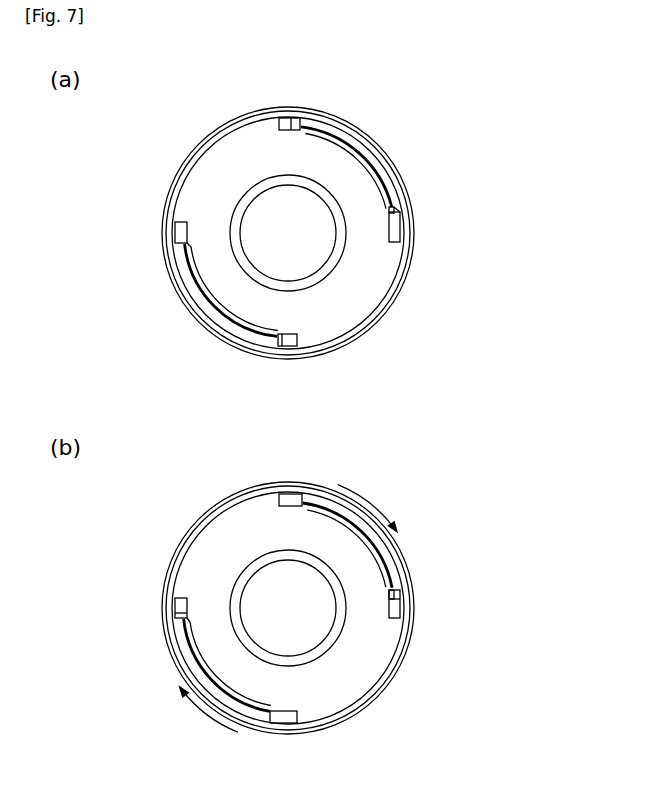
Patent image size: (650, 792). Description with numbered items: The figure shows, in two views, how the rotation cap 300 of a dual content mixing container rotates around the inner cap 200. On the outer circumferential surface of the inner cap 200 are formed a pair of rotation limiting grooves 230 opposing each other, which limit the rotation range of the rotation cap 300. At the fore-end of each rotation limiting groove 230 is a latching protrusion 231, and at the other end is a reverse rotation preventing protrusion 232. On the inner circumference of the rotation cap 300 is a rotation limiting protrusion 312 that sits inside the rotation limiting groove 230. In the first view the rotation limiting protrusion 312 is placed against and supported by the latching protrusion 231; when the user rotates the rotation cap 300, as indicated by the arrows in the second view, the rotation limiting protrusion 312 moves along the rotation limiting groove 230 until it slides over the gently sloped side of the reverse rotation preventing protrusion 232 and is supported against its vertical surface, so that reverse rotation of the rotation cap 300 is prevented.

The inner cap 200 is at (200, 203).
The rotation limiting groove 230 is at (350, 152).
The latching protrusion 231 is at (302, 128).
The reverse rotation preventing protrusion 232 is at (396, 215).
The rotation cap 300 is at (172, 289).
The rotation limiting protrusion 312 is at (291, 125).